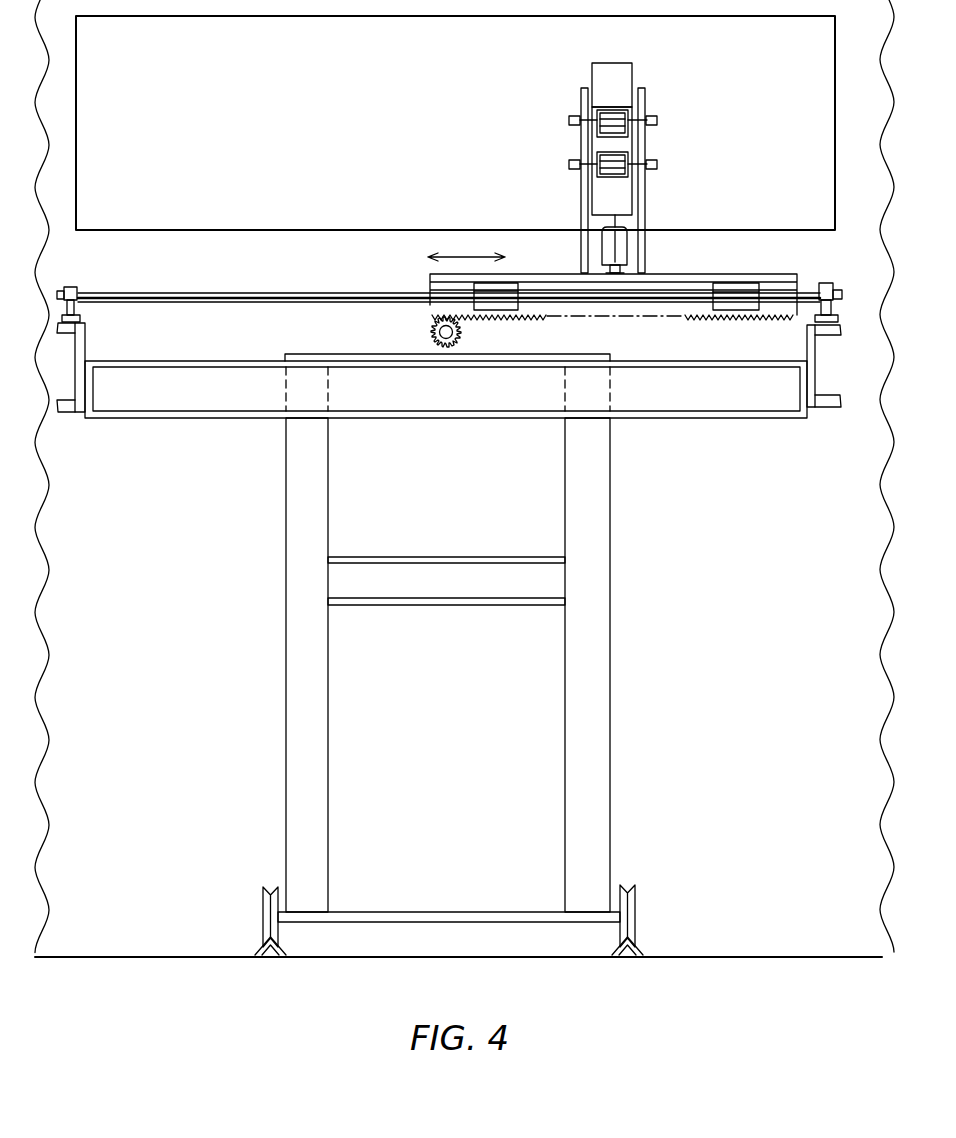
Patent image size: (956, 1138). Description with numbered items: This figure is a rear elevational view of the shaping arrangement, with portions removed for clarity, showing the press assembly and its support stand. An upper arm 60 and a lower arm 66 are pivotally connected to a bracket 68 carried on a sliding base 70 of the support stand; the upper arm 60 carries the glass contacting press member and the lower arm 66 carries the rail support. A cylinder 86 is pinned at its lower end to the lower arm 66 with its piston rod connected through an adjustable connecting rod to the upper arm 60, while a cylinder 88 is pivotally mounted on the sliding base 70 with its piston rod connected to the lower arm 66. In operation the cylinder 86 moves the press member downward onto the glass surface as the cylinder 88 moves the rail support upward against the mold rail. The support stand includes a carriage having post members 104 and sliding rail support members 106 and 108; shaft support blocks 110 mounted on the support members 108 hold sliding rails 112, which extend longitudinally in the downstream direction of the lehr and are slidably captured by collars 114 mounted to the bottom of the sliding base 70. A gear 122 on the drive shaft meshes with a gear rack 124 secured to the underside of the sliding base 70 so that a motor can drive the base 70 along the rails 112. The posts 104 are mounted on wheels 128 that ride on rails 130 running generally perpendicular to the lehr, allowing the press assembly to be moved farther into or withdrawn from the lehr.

The upper arm 60 is at (618, 63).
The lower arm 66 is at (627, 193).
The bracket 68 is at (582, 192).
The sliding base 70 is at (735, 274).
The cylinder 86 is at (630, 137).
The cylinder 88 is at (625, 241).
The post members 104 is at (567, 703).
The sliding rail support member 106 is at (165, 419).
The sliding rail support member 108 is at (87, 338).
The shaft support blocks 110 is at (70, 287).
The sliding rails 112 is at (246, 293).
The collars 114 is at (497, 302).
The gear 122 is at (432, 330).
The gear rack 124 is at (548, 318).
The wheels 128 is at (262, 894).
The rails 130 is at (285, 948).